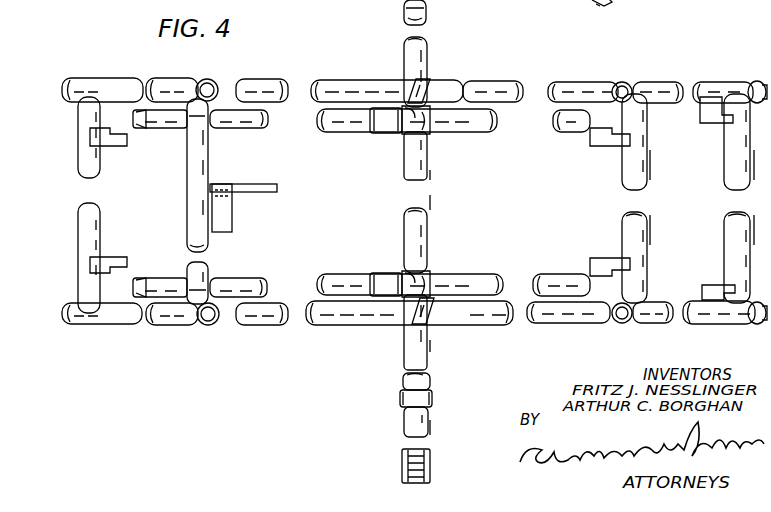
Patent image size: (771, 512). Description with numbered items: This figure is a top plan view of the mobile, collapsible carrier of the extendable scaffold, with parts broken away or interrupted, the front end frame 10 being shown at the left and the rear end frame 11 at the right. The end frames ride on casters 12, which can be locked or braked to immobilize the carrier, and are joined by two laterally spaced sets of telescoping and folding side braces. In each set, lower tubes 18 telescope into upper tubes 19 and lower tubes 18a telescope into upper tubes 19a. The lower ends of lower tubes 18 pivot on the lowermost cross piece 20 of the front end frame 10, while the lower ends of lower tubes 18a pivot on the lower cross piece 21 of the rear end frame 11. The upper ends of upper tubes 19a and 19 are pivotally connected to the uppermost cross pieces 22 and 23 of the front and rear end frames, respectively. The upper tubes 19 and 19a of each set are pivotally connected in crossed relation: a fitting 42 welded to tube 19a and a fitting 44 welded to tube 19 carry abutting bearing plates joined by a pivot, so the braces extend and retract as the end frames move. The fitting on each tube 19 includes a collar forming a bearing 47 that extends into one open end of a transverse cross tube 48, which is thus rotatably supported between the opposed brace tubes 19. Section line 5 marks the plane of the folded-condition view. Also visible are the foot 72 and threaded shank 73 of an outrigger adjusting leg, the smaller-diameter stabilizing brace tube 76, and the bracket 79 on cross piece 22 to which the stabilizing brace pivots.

The section line 5 is at (450, 40).
The front end frame 10 is at (171, 78).
The rear end frame 11 is at (660, 104).
The casters 12 is at (405, 466).
The lower tubes 18 is at (155, 129).
The lower tubes 18a is at (502, 80).
The upper tubes 19 is at (481, 133).
The upper tubes 19a is at (268, 77).
The lowermost cross piece 20 is at (100, 218).
The lower cross piece 21 is at (724, 244).
The uppermost cross piece 22 is at (186, 186).
The uppermost cross piece 23 is at (648, 224).
The fitting 42 is at (424, 91).
The fitting 44 is at (434, 126).
The bearing 47 is at (402, 146).
The cross tube 48 is at (423, 233).
The foot 72 is at (595, 2).
The threaded shank 73 is at (410, 450).
The tube 76 is at (275, 178).
The bracket 79 is at (232, 218).